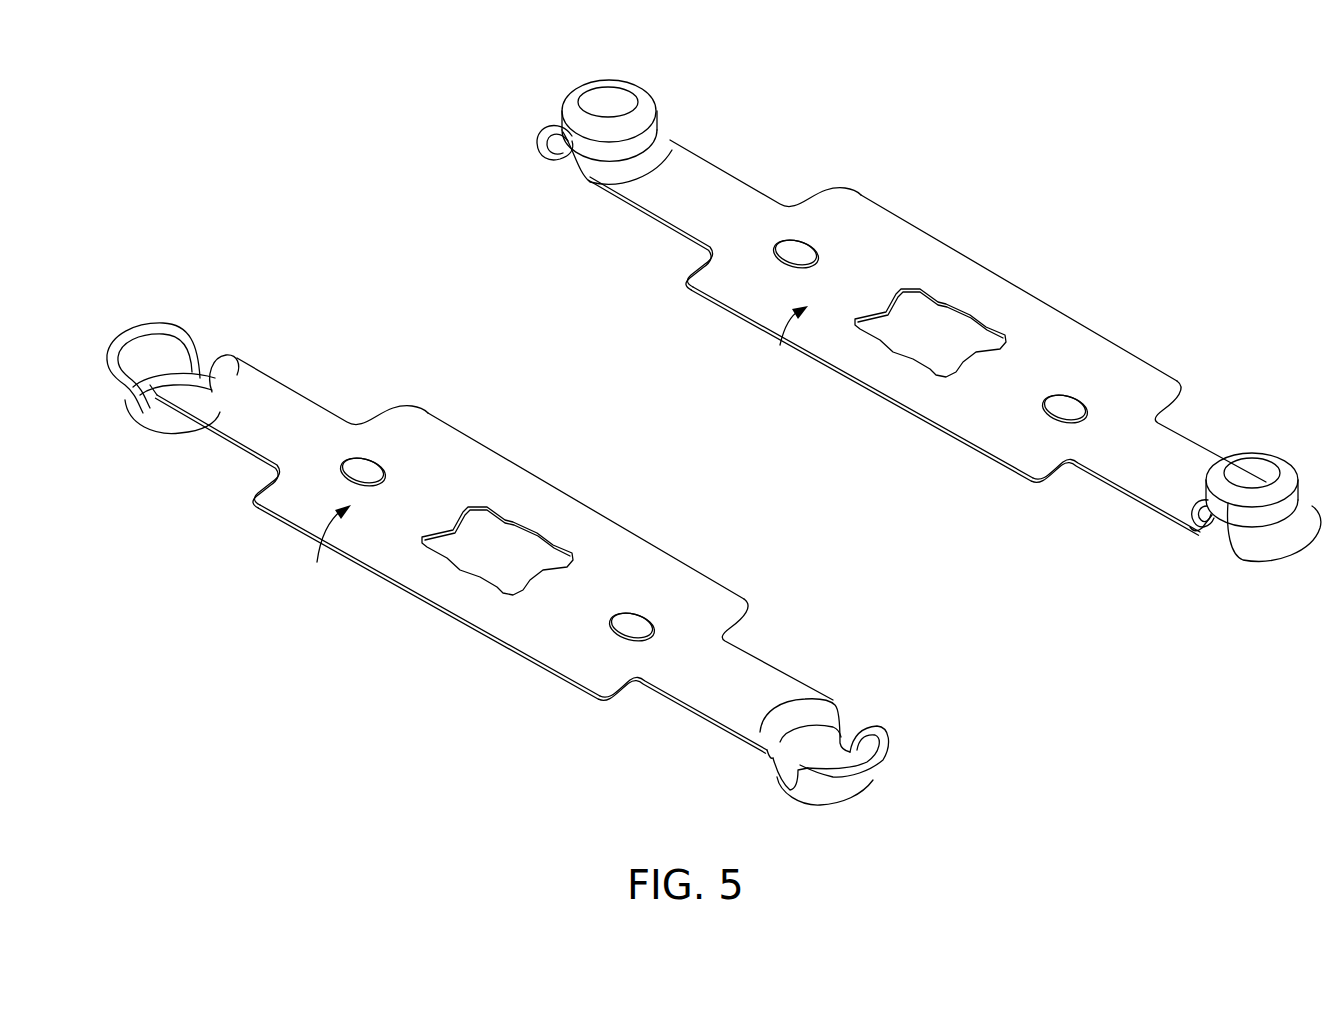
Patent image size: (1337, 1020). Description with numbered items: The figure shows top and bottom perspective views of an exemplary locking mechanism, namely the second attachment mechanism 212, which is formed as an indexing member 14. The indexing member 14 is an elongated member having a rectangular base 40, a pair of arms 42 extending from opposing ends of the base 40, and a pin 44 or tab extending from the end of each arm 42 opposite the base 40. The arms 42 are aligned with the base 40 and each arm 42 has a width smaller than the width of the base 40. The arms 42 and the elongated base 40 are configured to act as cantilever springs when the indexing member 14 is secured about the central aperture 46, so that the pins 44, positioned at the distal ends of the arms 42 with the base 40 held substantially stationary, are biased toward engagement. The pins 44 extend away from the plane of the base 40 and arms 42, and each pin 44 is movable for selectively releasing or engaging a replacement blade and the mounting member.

The indexing member 14 is at (80, 337).
The rectangular base 40 is at (557, 640).
The arms 42 is at (270, 412).
The pin 44 is at (150, 428).
The central aperture 46 is at (520, 548).
The second attachment mechanism 212 is at (552, 449).